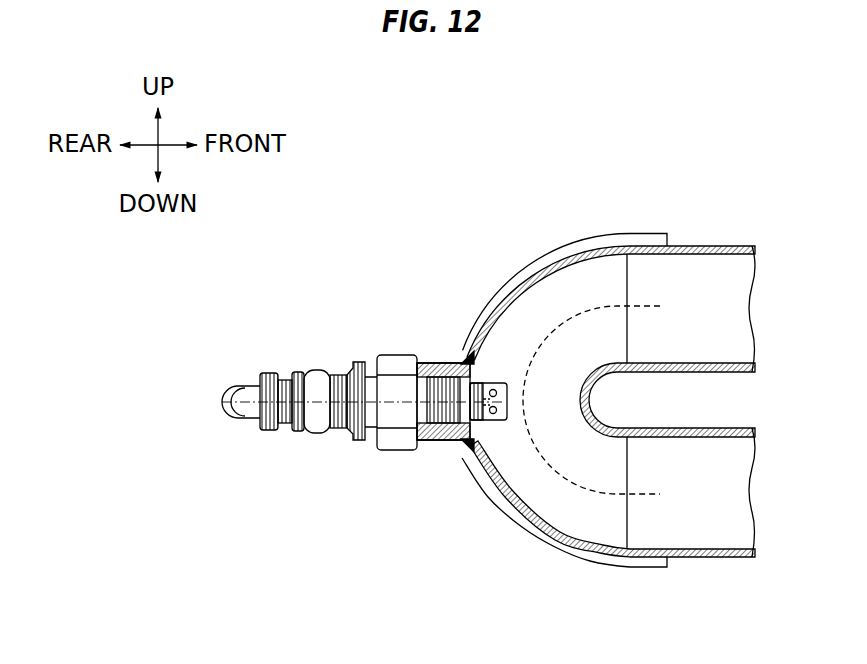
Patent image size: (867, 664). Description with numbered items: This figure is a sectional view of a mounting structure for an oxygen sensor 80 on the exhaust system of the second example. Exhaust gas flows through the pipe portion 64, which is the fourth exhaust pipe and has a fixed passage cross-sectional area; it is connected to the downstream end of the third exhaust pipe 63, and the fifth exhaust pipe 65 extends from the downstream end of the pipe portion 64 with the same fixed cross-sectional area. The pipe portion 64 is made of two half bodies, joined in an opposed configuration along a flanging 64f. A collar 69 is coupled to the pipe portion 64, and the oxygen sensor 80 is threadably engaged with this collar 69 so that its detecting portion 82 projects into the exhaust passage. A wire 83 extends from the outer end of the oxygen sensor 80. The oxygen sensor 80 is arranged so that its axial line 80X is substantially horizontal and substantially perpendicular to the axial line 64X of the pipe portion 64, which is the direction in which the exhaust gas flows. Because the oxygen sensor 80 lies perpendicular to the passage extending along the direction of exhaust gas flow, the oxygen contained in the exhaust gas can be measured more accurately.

The third exhaust pipe 63 is at (697, 557).
The pipe portion 64 is at (518, 283).
The flanging 64f is at (584, 240).
The axial line of the pipe portion 64X is at (647, 490).
The fifth exhaust pipe 65 is at (713, 246).
The collar 69 is at (437, 362).
The oxygen sensor 80 is at (395, 364).
The axial line of the oxygen sensor 80X is at (513, 400).
The detecting portion 82 is at (471, 376).
The wire 83 is at (222, 402).